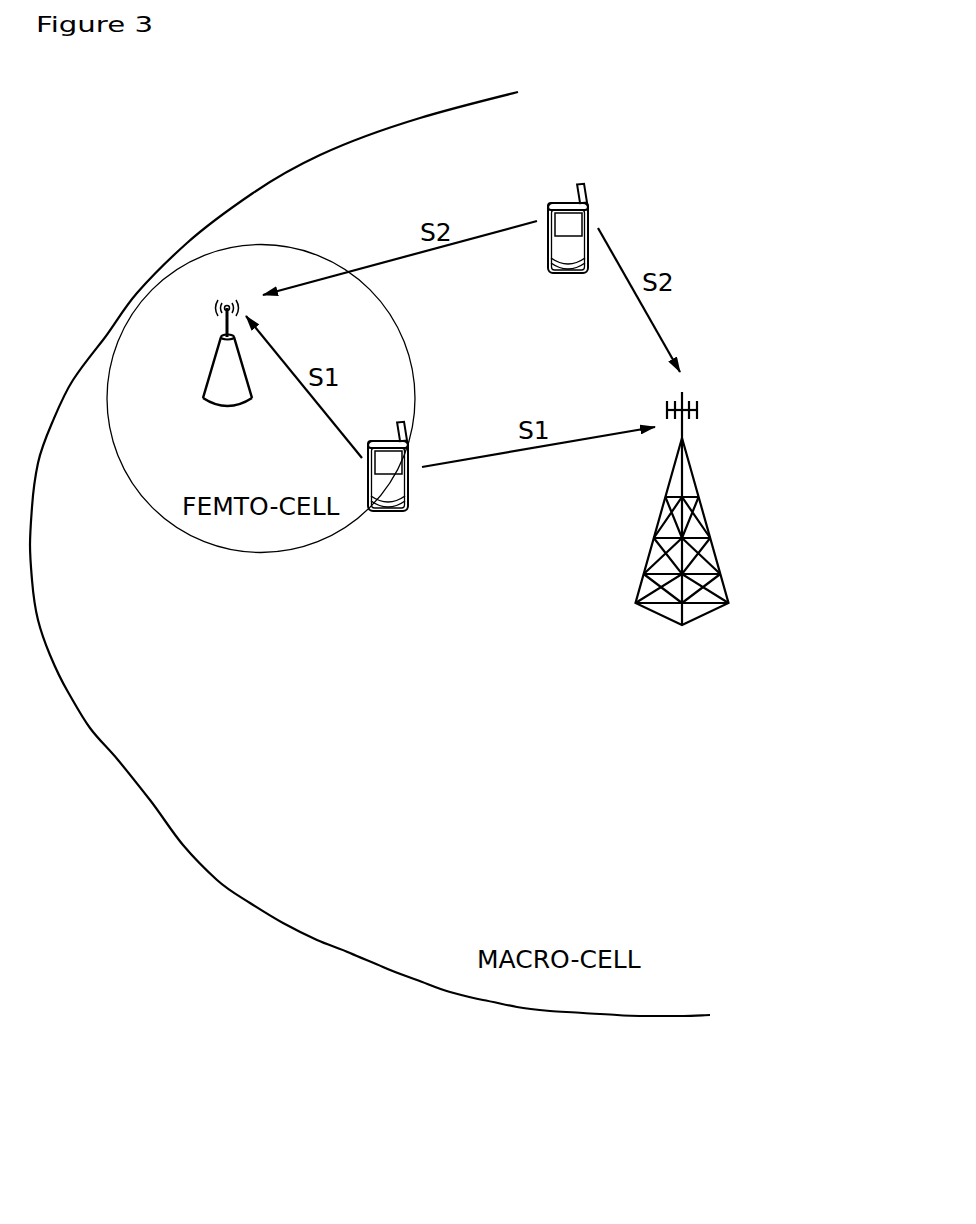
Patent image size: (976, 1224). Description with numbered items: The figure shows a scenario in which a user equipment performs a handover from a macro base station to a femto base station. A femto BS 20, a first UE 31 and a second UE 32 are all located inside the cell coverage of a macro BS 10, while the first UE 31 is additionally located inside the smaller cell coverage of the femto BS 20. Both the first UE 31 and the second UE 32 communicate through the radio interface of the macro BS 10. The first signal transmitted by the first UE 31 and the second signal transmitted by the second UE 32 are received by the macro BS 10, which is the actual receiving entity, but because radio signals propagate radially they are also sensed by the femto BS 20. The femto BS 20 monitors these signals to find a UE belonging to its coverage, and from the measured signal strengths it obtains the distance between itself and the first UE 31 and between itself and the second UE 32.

The macro BS 10 is at (697, 482).
The femto BS 20 is at (213, 358).
The UE-1 31 is at (408, 482).
The UE-2 32 is at (588, 207).